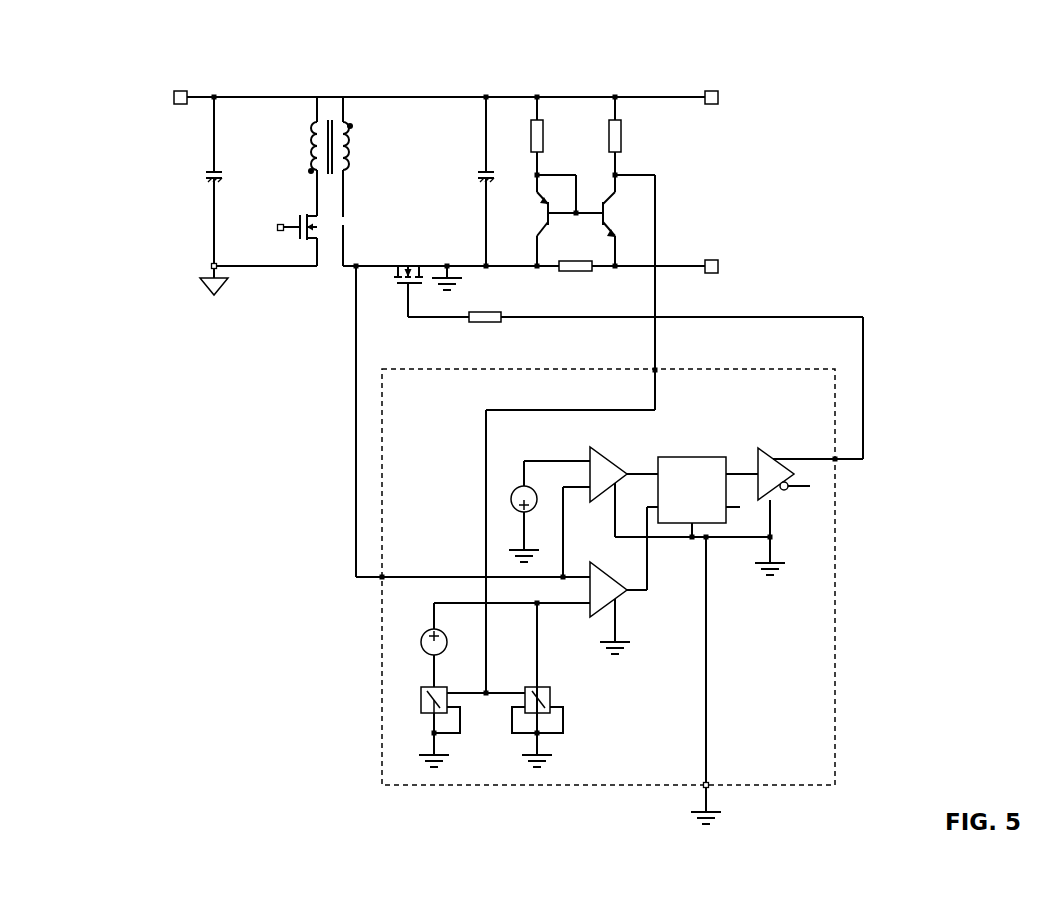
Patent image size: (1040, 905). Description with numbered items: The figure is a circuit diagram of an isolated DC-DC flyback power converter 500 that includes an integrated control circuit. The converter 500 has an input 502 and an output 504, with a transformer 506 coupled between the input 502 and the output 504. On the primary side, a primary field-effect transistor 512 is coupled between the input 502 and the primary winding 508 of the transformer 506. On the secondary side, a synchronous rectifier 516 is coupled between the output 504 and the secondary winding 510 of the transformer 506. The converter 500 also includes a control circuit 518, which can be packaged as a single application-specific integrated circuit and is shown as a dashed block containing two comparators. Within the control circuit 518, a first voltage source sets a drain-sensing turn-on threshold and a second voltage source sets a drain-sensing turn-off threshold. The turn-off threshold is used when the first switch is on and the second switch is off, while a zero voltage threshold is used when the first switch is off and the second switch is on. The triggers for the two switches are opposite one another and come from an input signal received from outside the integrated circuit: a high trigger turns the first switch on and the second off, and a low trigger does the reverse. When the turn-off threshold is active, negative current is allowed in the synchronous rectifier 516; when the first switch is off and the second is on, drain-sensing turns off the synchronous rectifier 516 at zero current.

The isolated DC-DC flyback power converter 500 is at (889, 88).
The input 502 is at (174, 97).
The output 504 is at (719, 98).
The transformer 506 is at (304, 153).
The primary winding 508 is at (328, 159).
The secondary winding 510 is at (357, 148).
The primary field-effect transistor 512 is at (310, 205).
The synchronous rectifier 516 is at (400, 263).
The control circuit 518 is at (381, 661).